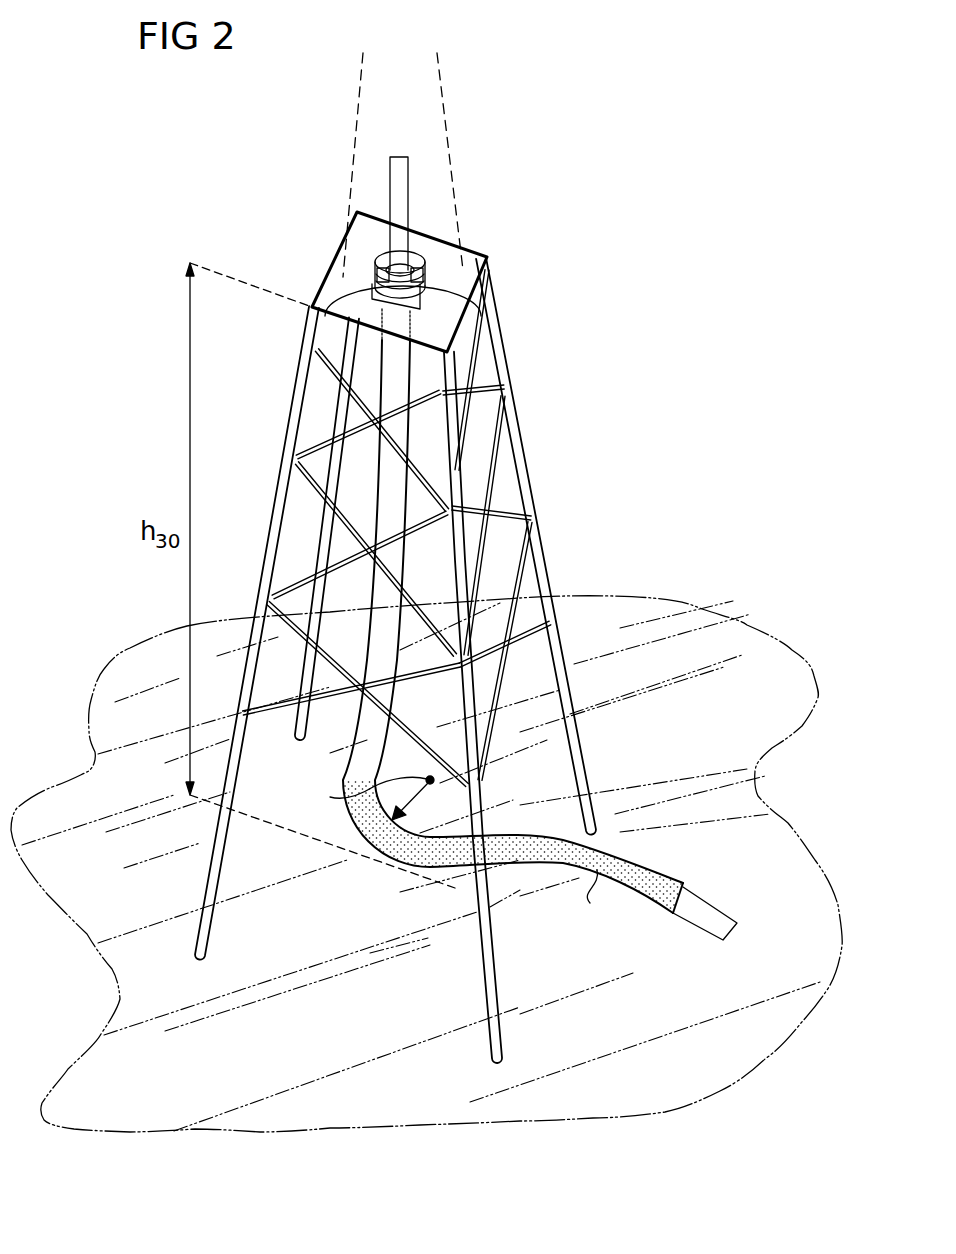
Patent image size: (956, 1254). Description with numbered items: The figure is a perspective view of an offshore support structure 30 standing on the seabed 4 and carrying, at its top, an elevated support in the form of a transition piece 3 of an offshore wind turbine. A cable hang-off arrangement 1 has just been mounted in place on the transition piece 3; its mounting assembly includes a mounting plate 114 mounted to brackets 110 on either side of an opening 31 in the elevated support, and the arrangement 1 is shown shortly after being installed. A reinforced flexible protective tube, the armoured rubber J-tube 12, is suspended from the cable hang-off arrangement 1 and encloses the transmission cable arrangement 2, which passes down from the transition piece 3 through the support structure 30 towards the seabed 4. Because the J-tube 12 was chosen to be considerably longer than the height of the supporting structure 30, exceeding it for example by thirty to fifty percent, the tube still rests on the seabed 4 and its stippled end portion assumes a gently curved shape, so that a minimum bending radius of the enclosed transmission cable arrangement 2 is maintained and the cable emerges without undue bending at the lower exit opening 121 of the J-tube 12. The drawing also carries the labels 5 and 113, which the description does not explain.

The cable hang-off arrangement 1 is at (404, 604).
The transmission cable arrangement 2 is at (397, 163).
The transition piece 3 is at (467, 258).
The seabed 4 is at (729, 646).
The wind turbine tower 5 is at (443, 100).
The armoured rubber J-tube 12 is at (494, 660).
The offshore support structure 30 is at (404, 660).
The opening in the elevated support 31 is at (321, 320).
The brackets 110 is at (415, 263).
The connector top ring 113 is at (412, 245).
The mounting plate 114 is at (372, 270).
The lower exit opening 121 is at (677, 915).